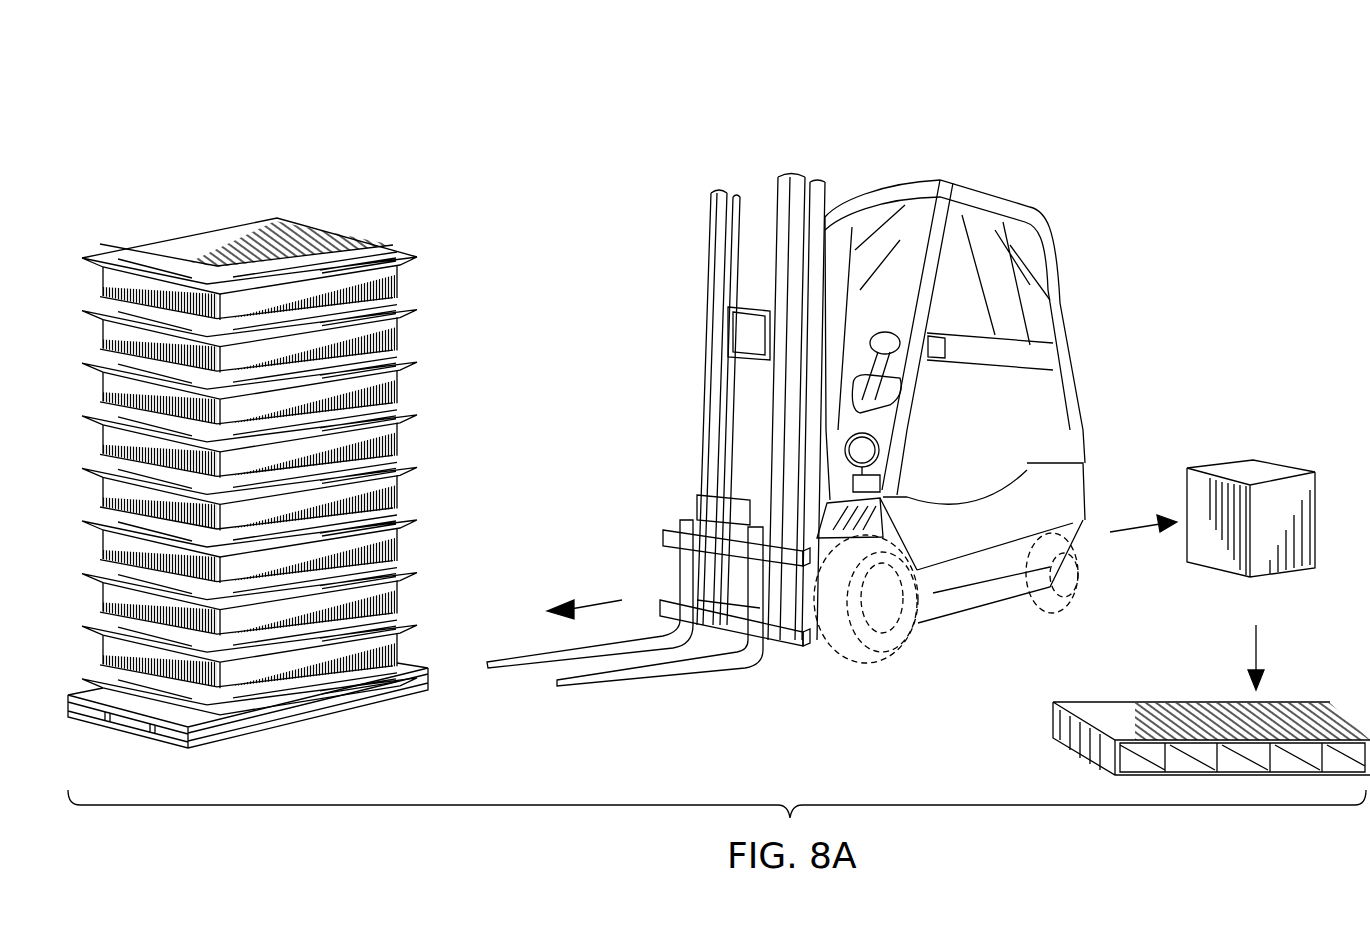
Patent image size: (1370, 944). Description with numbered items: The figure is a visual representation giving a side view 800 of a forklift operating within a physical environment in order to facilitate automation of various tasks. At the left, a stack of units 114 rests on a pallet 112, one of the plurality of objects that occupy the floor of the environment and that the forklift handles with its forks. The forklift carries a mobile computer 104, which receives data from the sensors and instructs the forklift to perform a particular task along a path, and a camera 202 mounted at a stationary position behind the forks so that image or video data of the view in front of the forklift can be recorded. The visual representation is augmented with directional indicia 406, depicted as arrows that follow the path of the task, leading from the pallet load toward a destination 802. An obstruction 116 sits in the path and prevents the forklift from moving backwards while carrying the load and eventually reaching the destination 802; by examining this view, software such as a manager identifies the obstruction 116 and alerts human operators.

The side view 800 is at (1037, 84).
The unit 114 is at (460, 238).
The pallet 112 is at (425, 697).
The mobile computer 104 is at (753, 420).
The camera 202 is at (742, 330).
The obstruction 116 is at (1222, 462).
The destination 802 is at (1053, 738).
The directional indicia 406 is at (577, 600).